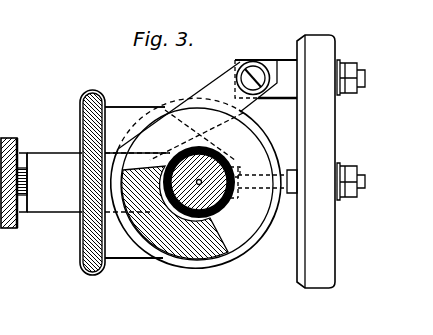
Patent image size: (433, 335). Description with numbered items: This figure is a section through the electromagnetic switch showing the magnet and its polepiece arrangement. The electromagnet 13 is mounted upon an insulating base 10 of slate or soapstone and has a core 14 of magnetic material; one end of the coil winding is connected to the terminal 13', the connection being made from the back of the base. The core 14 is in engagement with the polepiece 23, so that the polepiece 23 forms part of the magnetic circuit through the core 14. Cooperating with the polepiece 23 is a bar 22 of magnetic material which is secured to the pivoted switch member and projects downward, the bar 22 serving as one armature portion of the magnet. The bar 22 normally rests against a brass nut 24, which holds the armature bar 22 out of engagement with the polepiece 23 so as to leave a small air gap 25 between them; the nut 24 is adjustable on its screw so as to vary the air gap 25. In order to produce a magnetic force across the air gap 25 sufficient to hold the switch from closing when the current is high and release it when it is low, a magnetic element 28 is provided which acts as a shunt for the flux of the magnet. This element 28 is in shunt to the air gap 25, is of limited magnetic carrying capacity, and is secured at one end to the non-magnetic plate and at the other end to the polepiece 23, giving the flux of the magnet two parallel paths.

The insulating base 10 is at (327, 144).
The electromagnet 13 is at (193, 183).
The terminal 13' is at (207, 87).
The core 14 is at (241, 150).
The bar 22 is at (8, 138).
The polepiece 23 is at (54, 182).
The brass nut 24 is at (22, 200).
The air gap 25 is at (23, 155).
The magnetic element 28 is at (80, 258).